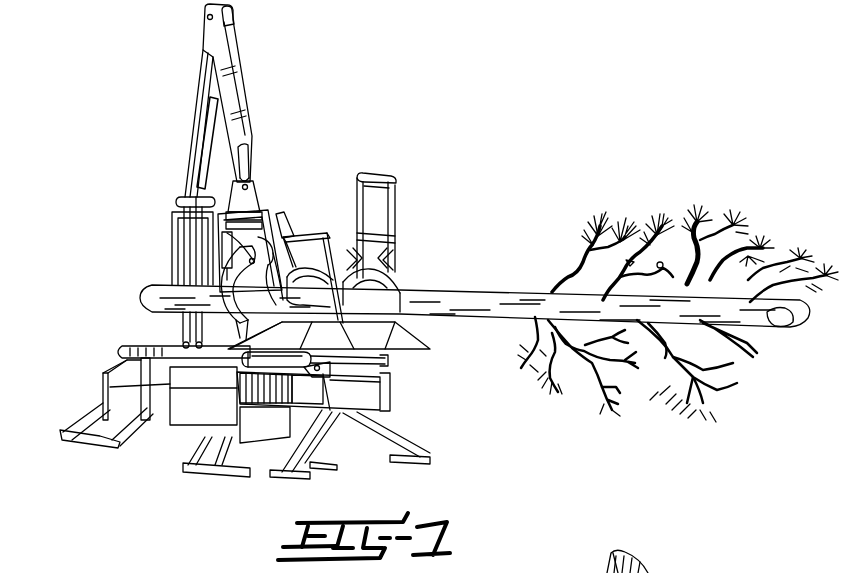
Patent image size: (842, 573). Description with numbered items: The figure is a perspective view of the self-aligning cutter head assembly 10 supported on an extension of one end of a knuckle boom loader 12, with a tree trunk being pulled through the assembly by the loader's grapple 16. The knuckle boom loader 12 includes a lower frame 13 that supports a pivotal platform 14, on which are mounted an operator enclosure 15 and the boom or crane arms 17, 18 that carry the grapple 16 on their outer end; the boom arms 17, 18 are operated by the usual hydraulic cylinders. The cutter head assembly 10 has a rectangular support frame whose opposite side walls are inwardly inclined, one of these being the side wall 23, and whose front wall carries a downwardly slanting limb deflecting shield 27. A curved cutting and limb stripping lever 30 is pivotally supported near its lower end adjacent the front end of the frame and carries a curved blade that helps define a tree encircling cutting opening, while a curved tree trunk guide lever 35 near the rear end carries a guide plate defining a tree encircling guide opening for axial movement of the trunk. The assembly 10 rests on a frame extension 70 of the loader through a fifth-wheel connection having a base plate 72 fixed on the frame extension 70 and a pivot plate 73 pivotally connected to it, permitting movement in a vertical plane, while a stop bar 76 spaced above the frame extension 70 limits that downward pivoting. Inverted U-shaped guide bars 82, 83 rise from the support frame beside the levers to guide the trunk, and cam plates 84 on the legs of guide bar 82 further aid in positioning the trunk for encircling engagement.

The self-aligning cutter head assembly 10 is at (420, 324).
The knuckle boom loader 12 is at (110, 352).
The lower frame 13 is at (156, 400).
The pivotal platform 14 is at (146, 344).
The operator enclosure 15 is at (174, 228).
The grapple 16 is at (255, 318).
The boom arm 17 is at (197, 104).
The boom arm 18 is at (234, 90).
The inwardly inclined side wall 23 is at (257, 320).
The limb deflecting shield 27 is at (404, 344).
The curved cutting and limb stripping lever 30 is at (374, 278).
The curved tree trunk guide lever 35 is at (313, 278).
The frame extension 70 is at (386, 400).
The base plate 72 is at (307, 392).
The pivot plate 73 is at (334, 354).
The stop bar 76 is at (248, 386).
The inverted U-shaped guide bar 82 is at (388, 176).
The inverted U-shaped guide bar 83 is at (292, 234).
The cam plate 84 is at (380, 256).